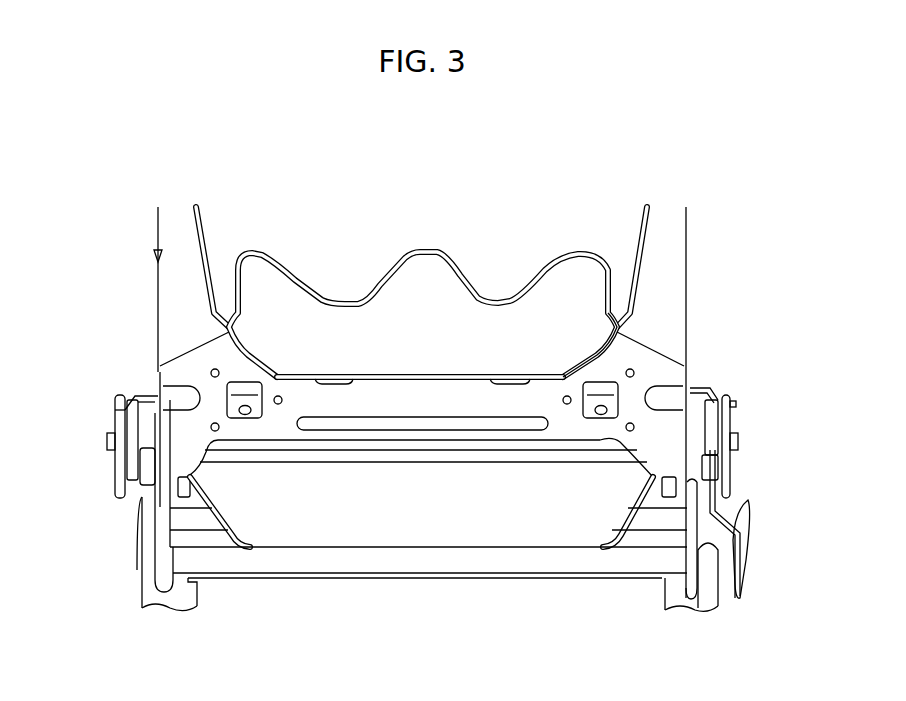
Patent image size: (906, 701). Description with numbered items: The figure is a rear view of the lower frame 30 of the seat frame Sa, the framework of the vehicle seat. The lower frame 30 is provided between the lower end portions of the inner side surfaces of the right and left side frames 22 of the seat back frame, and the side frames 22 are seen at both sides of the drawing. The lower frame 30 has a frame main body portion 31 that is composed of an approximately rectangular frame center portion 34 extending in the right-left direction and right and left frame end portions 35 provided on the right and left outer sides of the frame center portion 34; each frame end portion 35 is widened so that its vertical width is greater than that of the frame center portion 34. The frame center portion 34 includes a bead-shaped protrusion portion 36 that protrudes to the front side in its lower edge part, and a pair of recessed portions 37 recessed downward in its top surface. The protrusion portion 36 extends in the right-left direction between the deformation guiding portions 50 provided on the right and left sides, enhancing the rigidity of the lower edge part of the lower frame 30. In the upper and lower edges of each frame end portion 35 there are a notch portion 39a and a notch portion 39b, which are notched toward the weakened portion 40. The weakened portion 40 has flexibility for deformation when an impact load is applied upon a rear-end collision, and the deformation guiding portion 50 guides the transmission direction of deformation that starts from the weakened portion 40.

The seat frame Sa is at (138, 167).
The side frame 22 is at (177, 241).
The lower frame 30 is at (423, 286).
The frame main body portion 31 is at (368, 350).
The frame center portion 34 is at (415, 387).
The frame end portion 35 is at (205, 360).
The protrusion portion 36 is at (337, 430).
The recessed portion 37 is at (333, 377).
The notch portion 39a is at (600, 347).
The notch portion 39b is at (617, 447).
The weakened portion 40 is at (177, 397).
The deformation guiding portion 50 is at (247, 420).